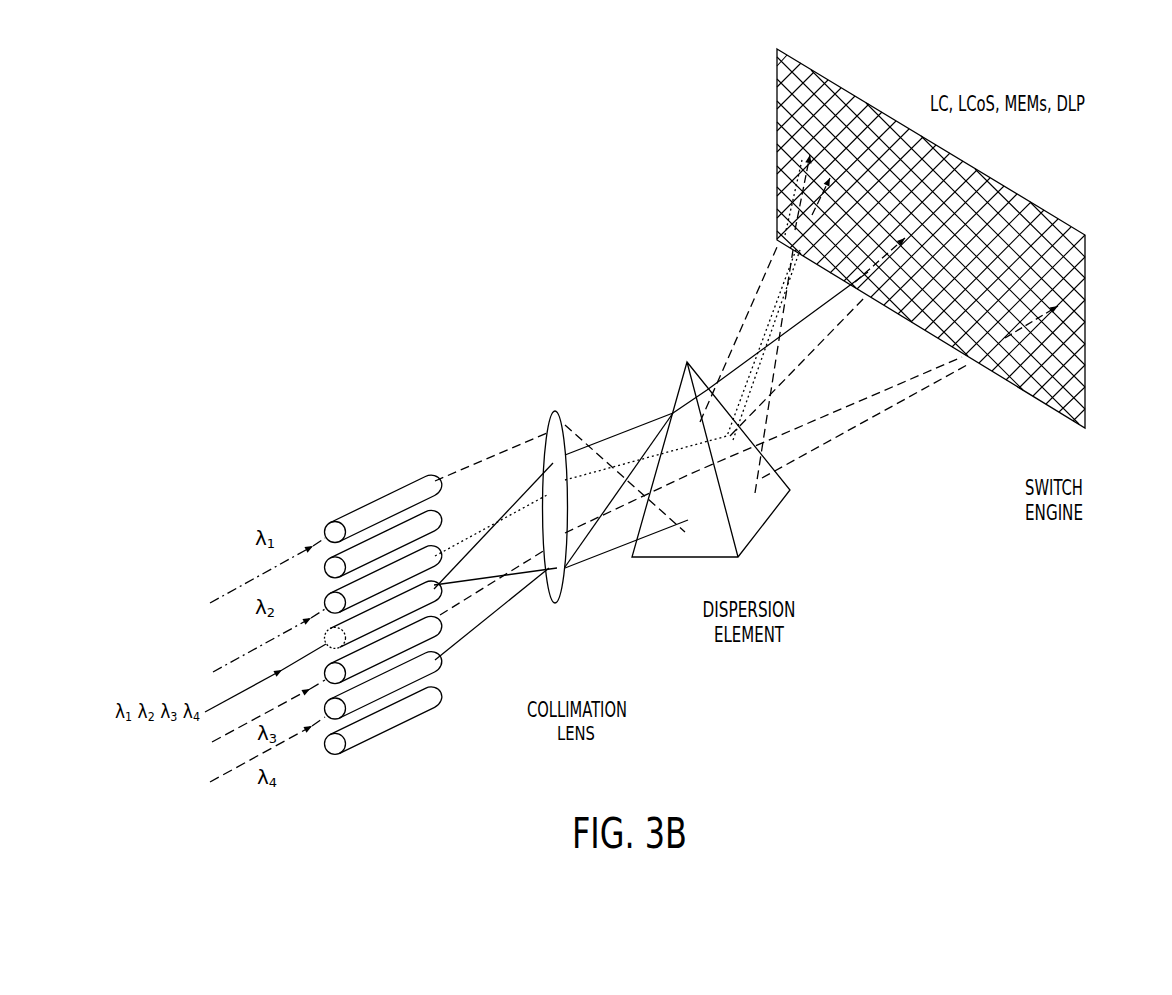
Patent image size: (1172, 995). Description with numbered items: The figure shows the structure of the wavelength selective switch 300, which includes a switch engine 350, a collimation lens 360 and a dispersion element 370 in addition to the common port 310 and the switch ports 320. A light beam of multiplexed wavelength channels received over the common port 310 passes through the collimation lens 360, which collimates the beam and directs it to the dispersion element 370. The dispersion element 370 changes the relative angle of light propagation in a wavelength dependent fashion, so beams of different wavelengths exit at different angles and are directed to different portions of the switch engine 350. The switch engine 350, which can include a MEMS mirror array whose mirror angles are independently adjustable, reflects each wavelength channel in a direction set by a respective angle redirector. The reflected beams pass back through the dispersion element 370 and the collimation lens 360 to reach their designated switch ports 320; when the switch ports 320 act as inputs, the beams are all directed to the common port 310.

The wavelength selective switch 300 is at (590, 166).
The common port 310 is at (381, 604).
The switch ports 320 is at (413, 484).
The switch engine 350 is at (1085, 352).
The collimation lens 360 is at (555, 411).
The dispersion element 370 is at (775, 505).